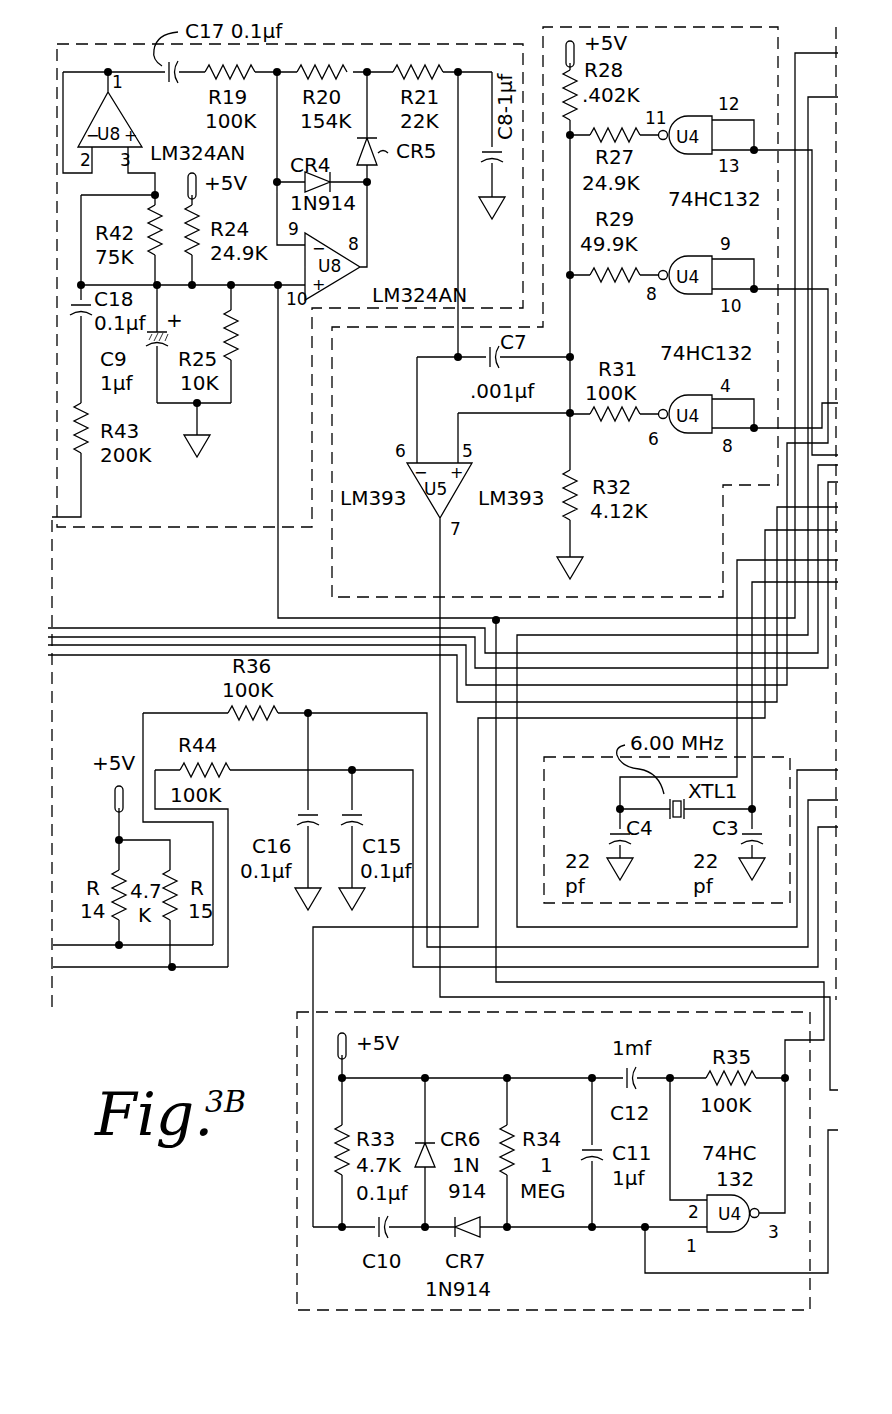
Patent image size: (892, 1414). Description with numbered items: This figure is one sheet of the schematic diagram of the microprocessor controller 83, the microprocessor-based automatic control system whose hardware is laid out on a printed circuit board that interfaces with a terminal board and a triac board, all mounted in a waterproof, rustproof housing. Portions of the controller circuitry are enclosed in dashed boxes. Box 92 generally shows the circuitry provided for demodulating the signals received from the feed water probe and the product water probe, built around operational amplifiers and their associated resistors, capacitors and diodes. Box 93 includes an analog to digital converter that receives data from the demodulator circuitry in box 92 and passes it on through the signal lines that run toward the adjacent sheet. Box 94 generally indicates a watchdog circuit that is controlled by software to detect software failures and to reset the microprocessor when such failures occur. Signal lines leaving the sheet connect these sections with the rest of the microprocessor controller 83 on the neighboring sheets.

The microprocessor controller 83 is at (162, 1299).
The demodulator circuitry box 92 is at (182, 527).
The analog to digital converter box 93 is at (332, 568).
The watchdog circuit box 94 is at (290, 1232).